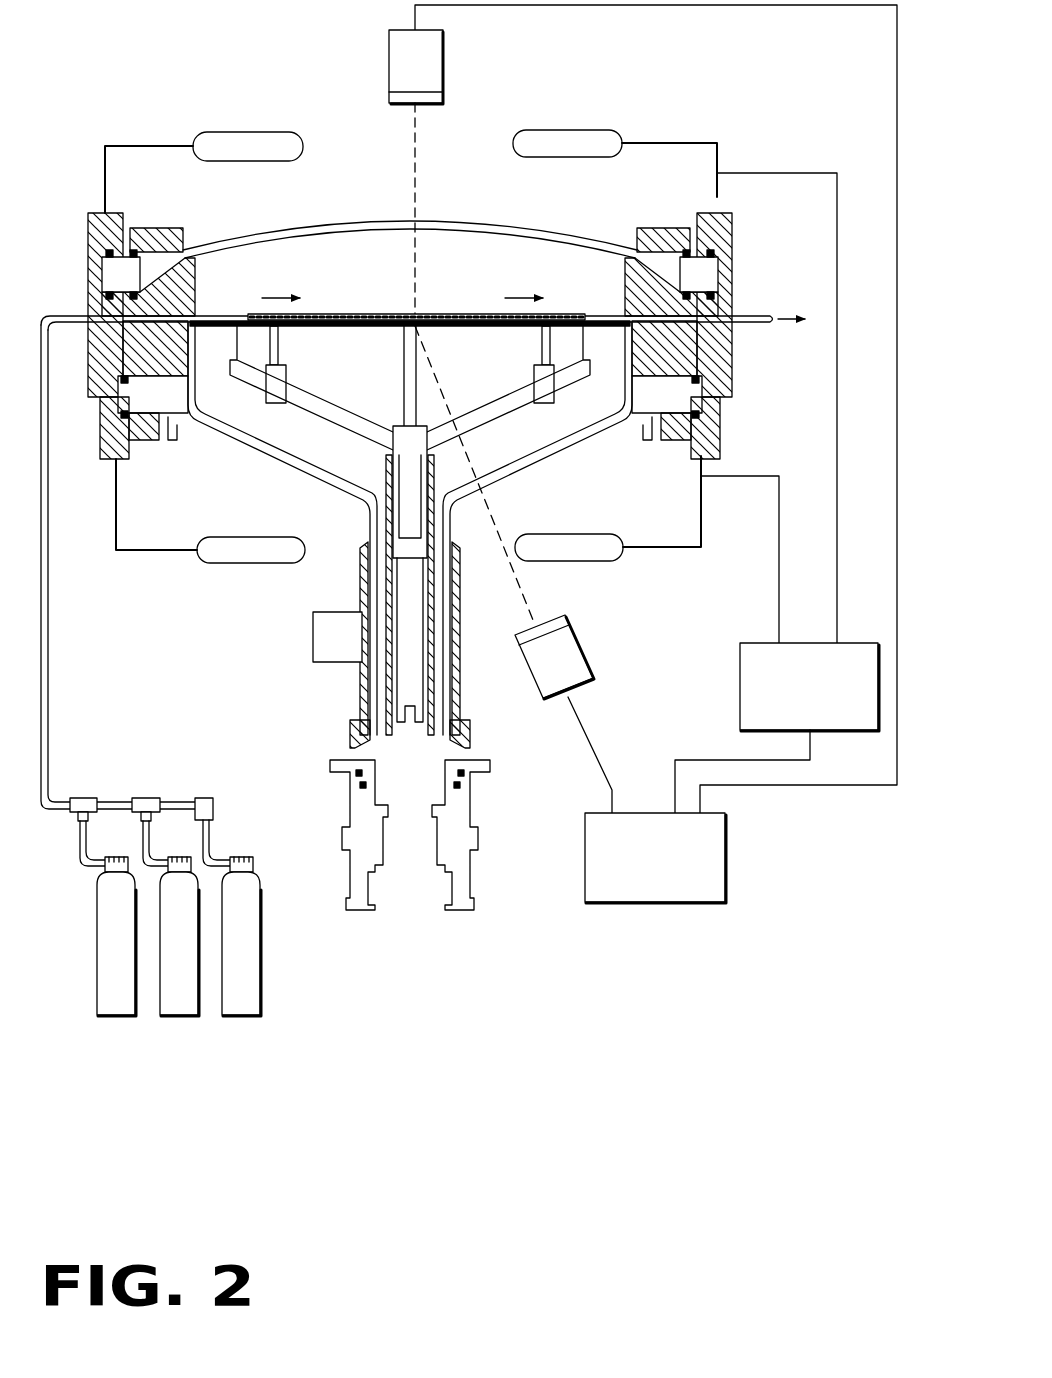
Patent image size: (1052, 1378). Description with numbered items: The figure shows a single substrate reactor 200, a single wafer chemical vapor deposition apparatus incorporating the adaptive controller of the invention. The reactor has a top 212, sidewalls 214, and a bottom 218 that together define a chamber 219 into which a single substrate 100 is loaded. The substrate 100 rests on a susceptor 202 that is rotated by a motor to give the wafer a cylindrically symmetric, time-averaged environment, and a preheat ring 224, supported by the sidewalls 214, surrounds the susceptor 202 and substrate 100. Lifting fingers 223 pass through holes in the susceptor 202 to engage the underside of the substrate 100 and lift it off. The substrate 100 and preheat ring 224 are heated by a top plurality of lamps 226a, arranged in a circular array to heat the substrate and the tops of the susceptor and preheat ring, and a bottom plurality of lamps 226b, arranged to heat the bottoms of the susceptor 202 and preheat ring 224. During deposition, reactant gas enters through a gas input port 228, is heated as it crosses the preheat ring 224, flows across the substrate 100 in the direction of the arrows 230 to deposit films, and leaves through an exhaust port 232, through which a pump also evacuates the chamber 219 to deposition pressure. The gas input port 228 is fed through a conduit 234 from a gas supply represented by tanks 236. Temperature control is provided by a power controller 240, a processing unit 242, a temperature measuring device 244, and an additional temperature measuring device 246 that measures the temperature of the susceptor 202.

The single substrate reactor 200 is at (130, 73).
The temperature measuring device 244 is at (388, 74).
The top plurality of lamps 226a is at (247, 134).
The bottom plurality of lamps 226b is at (247, 568).
The top 212 is at (411, 222).
The chamber 219 is at (482, 267).
The sidewalls 214 is at (92, 296).
The gas input port 228 is at (90, 324).
The exhaust port 232 is at (745, 324).
The substrate 100 is at (400, 313).
The arrows 230 is at (281, 297).
The susceptor 202 is at (346, 330).
The lifting fingers 223 is at (281, 343).
The preheat ring 224 is at (213, 330).
The bottom 218 is at (567, 474).
The conduit 234 is at (50, 484).
The tanks 236 is at (97, 921).
The temperature measuring device 246 is at (586, 643).
The power controller 240 is at (874, 729).
The processing unit 242 is at (718, 898).